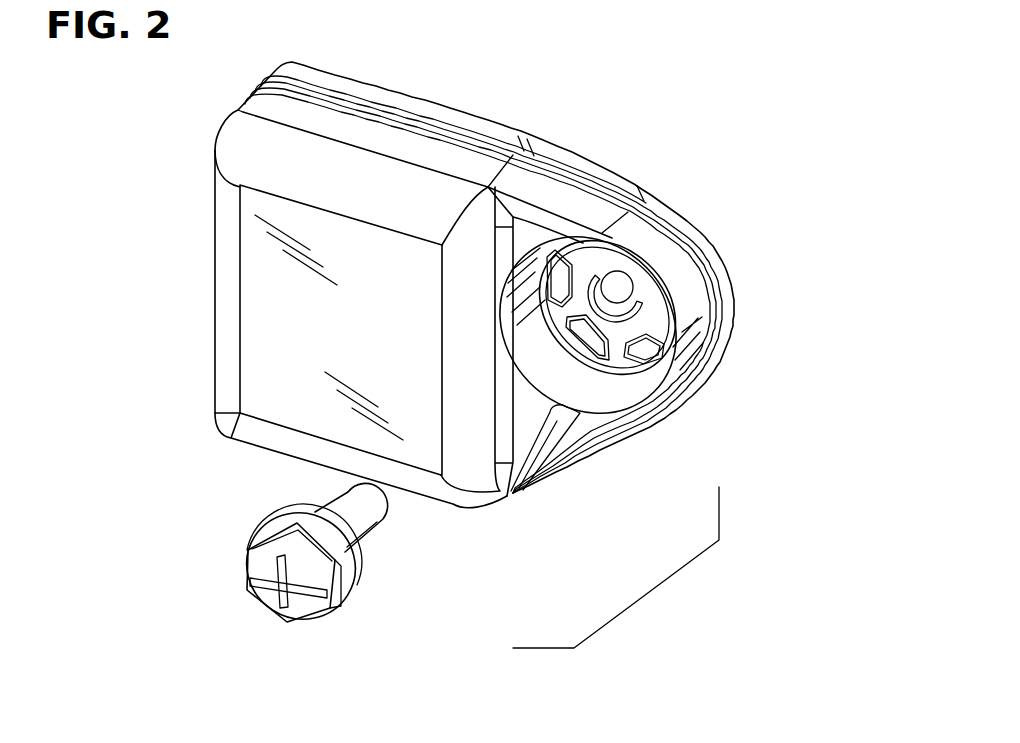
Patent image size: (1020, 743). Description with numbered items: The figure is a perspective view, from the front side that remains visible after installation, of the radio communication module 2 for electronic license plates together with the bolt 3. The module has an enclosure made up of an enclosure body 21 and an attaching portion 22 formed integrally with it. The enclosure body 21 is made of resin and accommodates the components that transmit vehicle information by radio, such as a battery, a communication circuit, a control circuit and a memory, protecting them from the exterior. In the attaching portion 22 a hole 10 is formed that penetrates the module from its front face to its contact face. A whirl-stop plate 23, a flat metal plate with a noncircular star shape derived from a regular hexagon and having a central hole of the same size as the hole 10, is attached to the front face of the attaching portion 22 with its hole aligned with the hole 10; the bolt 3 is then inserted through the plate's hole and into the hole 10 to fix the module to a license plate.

The radio communication module for electronic license plates 2 is at (589, 66).
The bolt 3 is at (250, 590).
The hole 10 is at (617, 295).
The enclosure body 21 is at (383, 175).
The attaching portion 22 is at (643, 257).
The whirl-stop plate 23 is at (612, 352).